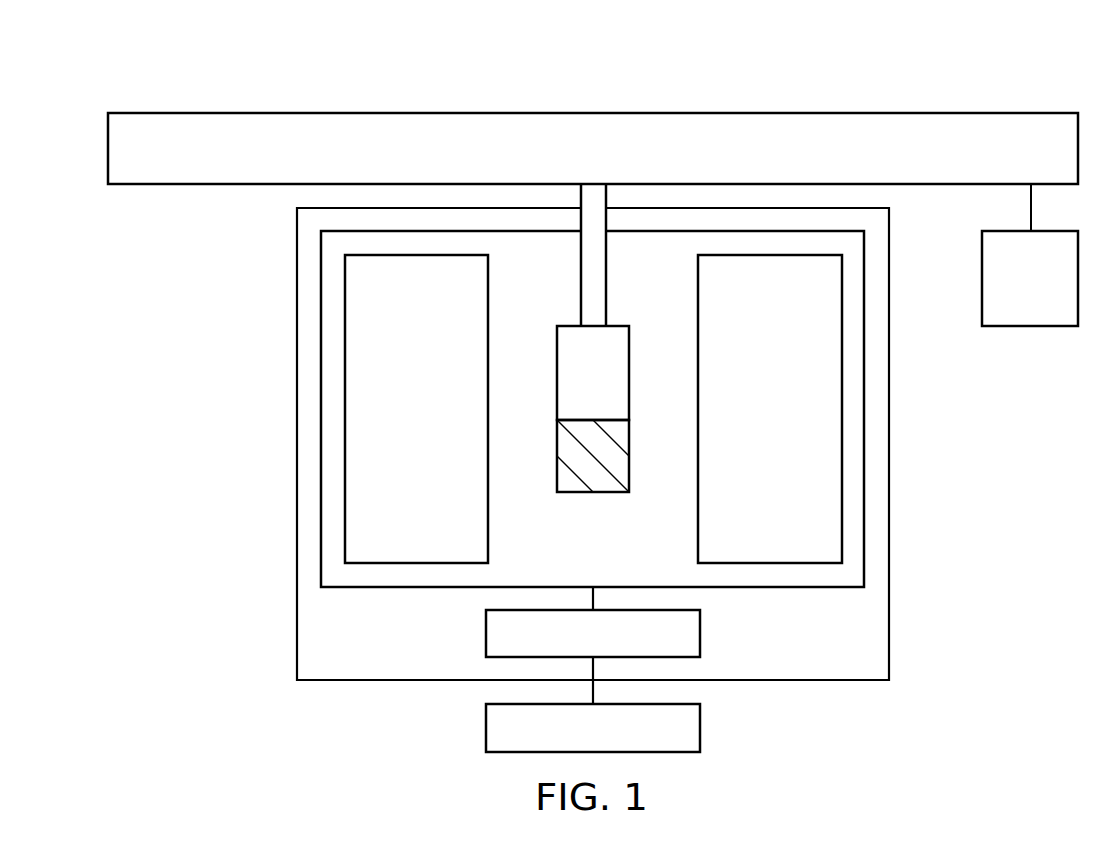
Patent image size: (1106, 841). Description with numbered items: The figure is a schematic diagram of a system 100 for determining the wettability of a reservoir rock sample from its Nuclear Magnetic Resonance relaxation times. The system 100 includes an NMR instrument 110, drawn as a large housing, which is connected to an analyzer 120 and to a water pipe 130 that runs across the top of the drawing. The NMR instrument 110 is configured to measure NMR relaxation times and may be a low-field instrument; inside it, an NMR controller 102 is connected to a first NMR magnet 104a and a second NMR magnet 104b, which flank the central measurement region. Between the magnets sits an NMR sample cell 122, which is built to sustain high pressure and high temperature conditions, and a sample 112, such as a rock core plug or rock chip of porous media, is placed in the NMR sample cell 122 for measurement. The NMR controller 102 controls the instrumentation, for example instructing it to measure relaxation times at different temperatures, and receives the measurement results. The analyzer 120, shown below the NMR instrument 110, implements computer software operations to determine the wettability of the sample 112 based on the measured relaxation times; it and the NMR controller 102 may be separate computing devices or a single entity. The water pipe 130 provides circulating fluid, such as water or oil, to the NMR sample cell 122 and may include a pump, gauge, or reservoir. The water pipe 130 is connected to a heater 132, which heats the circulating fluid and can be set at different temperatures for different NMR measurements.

The system 100 is at (358, 65).
The NMR controller 102 is at (486, 630).
The first NMR magnet 104a is at (385, 426).
The second NMR magnet 104b is at (739, 426).
The NMR instrument 110 is at (297, 443).
The sample 112 is at (600, 482).
The analyzer 120 is at (486, 724).
The NMR sample cell 122 is at (571, 390).
The water pipe 130 is at (571, 162).
The heater 132 is at (1008, 293).